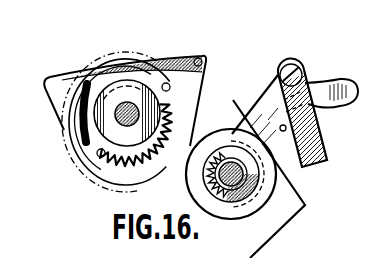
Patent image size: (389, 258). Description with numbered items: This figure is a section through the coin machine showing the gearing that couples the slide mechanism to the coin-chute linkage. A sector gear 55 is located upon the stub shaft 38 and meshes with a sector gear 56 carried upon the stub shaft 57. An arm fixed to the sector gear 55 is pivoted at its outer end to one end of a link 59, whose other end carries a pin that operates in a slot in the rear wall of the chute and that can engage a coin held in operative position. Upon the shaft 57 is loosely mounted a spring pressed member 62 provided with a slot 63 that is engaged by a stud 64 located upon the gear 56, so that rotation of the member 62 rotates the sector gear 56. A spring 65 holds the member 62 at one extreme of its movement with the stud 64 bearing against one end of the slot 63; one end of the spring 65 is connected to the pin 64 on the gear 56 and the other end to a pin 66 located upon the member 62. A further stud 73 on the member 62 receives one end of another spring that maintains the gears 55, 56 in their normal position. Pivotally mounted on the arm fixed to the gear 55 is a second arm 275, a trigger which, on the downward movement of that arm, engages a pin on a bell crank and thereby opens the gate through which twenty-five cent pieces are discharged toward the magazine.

The stub shaft 57 is at (125, 110).
The spring pressed member 62 is at (61, 83).
The pin 66 is at (166, 84).
The stud 73 is at (202, 62).
The spring 65 is at (162, 137).
The second arm 275 is at (342, 80).
The link 59 is at (328, 136).
The stub shaft 38 is at (232, 181).
The sector gear 55 is at (218, 222).
The slot 63 is at (85, 136).
The stud 64 is at (100, 155).
The sector gear 56 is at (102, 187).